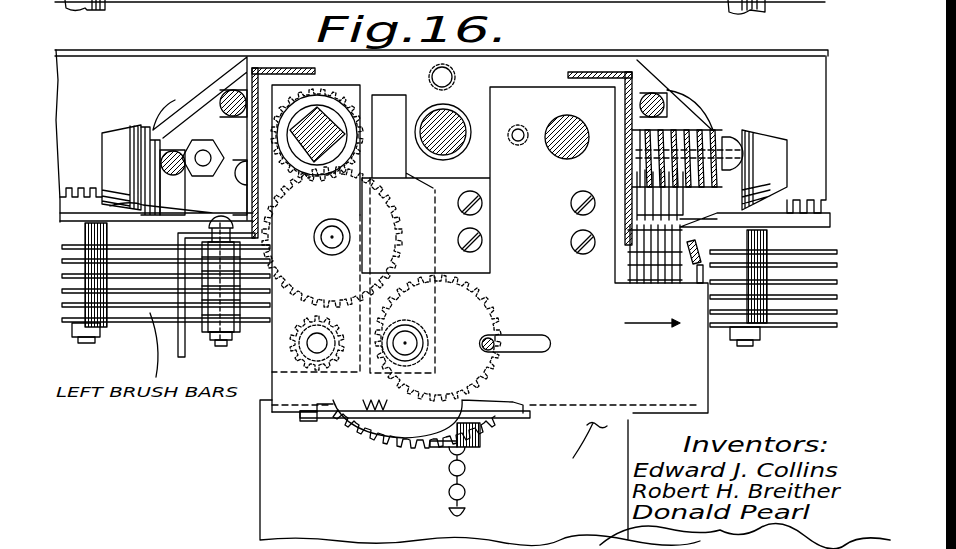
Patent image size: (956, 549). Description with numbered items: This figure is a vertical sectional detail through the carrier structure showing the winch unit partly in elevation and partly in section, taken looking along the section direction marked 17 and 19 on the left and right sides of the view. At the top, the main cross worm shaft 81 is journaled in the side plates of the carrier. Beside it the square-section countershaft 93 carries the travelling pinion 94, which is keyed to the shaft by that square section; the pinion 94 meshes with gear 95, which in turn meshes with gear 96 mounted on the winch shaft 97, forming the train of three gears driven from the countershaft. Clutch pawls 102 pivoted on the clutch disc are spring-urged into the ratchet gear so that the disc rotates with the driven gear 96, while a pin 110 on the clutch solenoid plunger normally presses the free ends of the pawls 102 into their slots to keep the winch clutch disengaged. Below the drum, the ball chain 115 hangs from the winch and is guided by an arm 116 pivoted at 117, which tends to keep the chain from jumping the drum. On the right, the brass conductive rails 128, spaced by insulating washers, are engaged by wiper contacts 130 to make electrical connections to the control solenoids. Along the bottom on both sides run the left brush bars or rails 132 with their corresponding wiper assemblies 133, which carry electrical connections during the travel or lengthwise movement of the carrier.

The adjusting knob 17 is at (77, 160).
The brush bars section indicator 19 is at (133, 360).
The main cross worm shaft 81 is at (447, 128).
The countershaft 93 is at (322, 132).
The travelling pinion 94 is at (322, 92).
The gear 95 is at (309, 323).
The gear 96 is at (453, 310).
The winch shaft 97 is at (406, 336).
The clutch pawls 102 is at (423, 431).
The pin 110 is at (510, 335).
The ball chain 115 is at (465, 494).
The arm 116 is at (517, 420).
The pivot 117 is at (593, 448).
The conductive rails 128 is at (673, 124).
The wiper contacts 130 is at (645, 232).
The brush bars or rails 132 is at (128, 290).
The wiper assemblies 133 is at (218, 305).